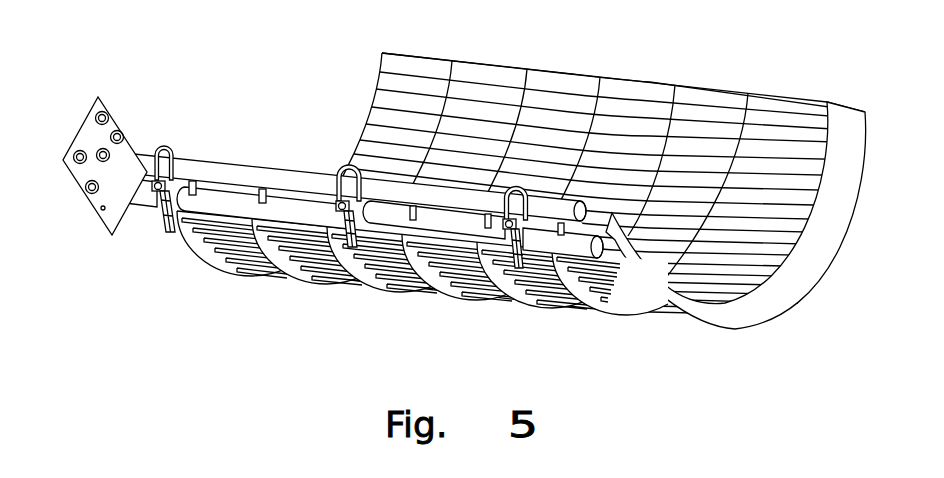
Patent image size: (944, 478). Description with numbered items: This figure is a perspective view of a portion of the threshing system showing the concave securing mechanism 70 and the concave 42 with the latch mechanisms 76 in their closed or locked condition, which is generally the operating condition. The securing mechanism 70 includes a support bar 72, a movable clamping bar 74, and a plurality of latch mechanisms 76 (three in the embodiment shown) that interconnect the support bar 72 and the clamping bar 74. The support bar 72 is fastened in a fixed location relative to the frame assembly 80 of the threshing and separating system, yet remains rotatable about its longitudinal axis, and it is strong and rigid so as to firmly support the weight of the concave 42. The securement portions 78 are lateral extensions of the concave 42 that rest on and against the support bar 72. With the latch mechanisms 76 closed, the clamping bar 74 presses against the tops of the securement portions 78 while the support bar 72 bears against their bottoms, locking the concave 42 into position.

The concave 42 is at (787, 282).
The concave securing mechanism 70 is at (146, 124).
The support bar 72 is at (141, 200).
The clamping bar 74 is at (250, 172).
The latch mechanism 76 is at (161, 246).
The securement portion 78 is at (192, 185).
The frame assembly 80 is at (103, 232).